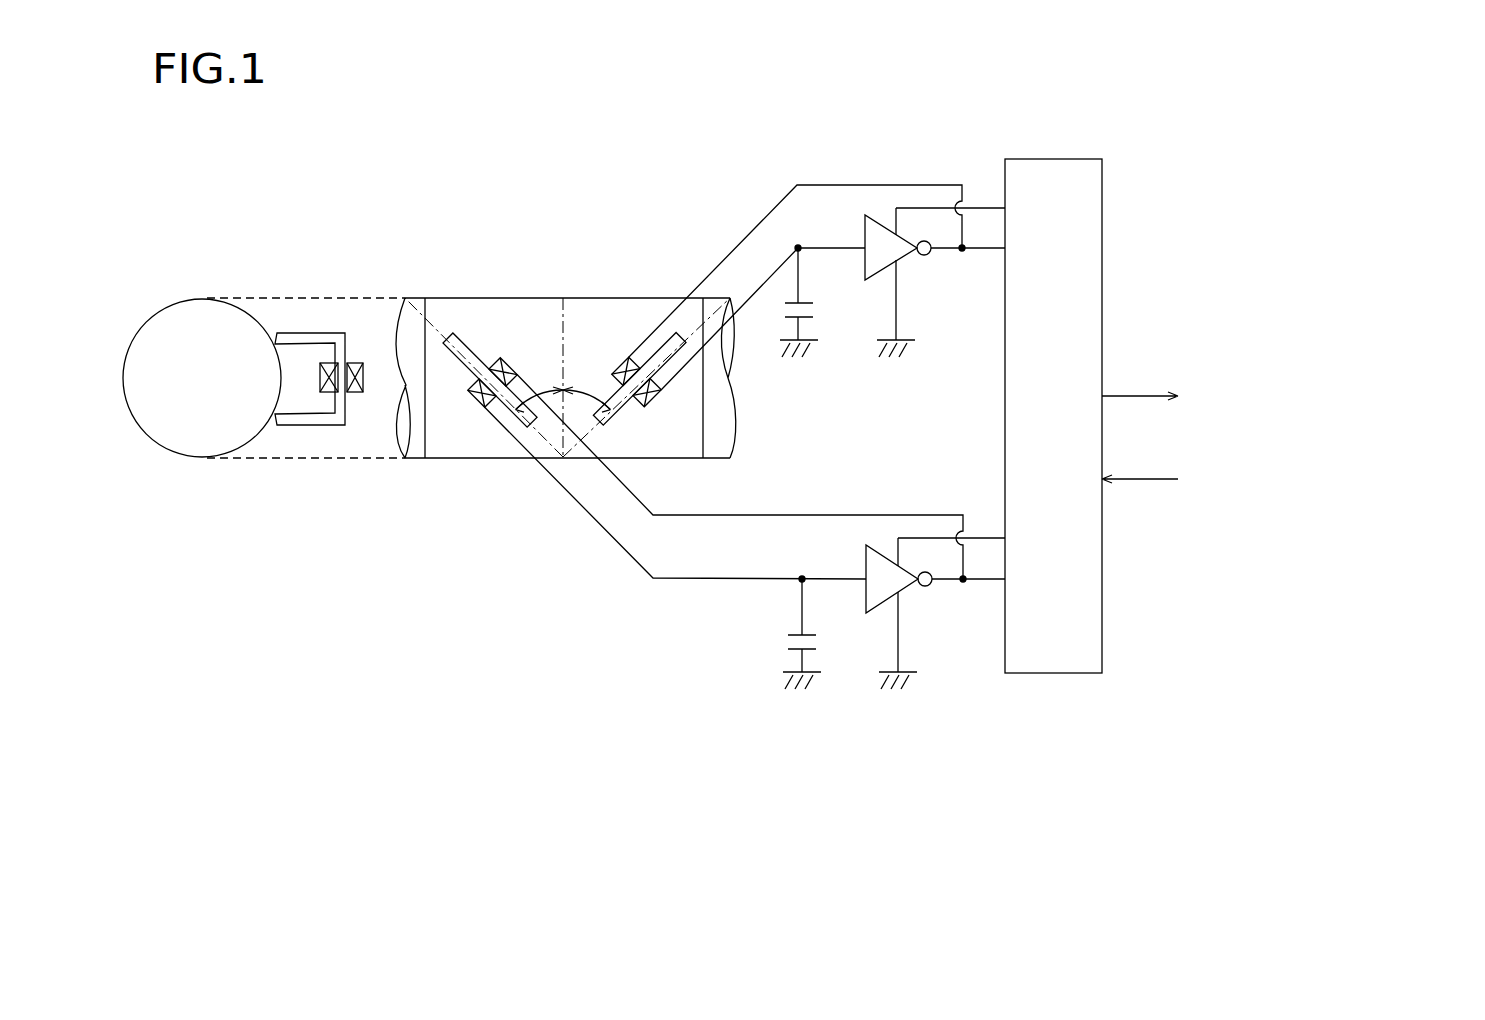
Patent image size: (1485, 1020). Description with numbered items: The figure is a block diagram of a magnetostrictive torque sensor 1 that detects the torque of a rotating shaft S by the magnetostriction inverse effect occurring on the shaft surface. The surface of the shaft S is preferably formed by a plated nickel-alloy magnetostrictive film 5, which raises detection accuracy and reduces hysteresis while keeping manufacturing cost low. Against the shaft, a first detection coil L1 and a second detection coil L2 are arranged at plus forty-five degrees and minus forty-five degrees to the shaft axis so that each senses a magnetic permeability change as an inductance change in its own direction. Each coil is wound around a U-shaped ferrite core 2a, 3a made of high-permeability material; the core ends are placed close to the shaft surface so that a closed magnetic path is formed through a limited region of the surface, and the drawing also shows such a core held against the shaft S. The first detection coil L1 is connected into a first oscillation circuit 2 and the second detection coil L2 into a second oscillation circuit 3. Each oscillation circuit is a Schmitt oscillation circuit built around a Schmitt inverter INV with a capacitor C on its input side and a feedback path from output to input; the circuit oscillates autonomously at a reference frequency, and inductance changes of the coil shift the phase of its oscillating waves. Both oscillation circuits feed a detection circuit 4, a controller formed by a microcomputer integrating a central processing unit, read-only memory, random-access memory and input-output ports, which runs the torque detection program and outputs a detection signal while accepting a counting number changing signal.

The magnetostrictive torque sensor 1 is at (704, 96).
The first oscillation circuit 2 is at (730, 233).
The second oscillation circuit 3 is at (733, 640).
The detection circuit 4 is at (1068, 158).
The magnetostrictive film 5 is at (400, 347).
The U-shaped ferrite core 2a is at (612, 425).
The U-shaped ferrite core 3a is at (303, 333).
The rotating shaft S is at (200, 458).
The first detection coil L1 is at (623, 358).
The second detection coil L2 is at (356, 395).
The capacitor C is at (790, 468).
The Schmitt inverter INV is at (872, 414).